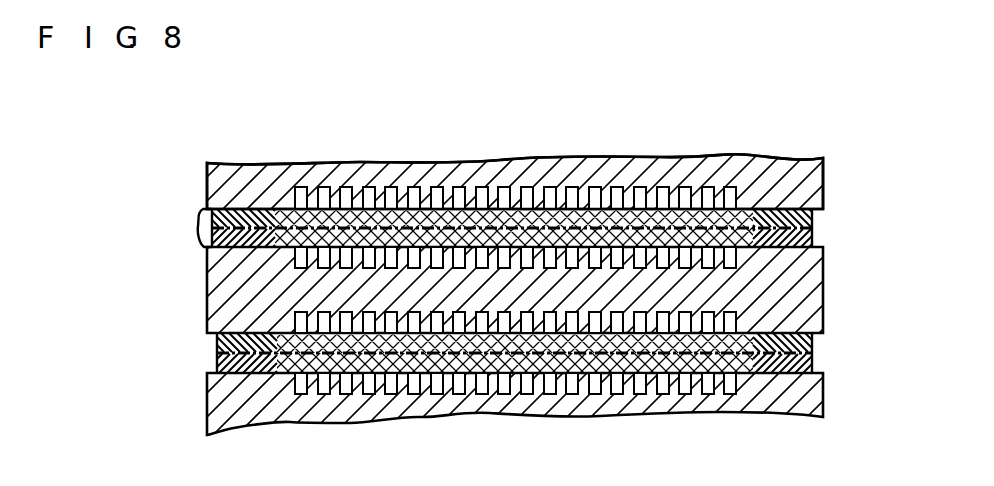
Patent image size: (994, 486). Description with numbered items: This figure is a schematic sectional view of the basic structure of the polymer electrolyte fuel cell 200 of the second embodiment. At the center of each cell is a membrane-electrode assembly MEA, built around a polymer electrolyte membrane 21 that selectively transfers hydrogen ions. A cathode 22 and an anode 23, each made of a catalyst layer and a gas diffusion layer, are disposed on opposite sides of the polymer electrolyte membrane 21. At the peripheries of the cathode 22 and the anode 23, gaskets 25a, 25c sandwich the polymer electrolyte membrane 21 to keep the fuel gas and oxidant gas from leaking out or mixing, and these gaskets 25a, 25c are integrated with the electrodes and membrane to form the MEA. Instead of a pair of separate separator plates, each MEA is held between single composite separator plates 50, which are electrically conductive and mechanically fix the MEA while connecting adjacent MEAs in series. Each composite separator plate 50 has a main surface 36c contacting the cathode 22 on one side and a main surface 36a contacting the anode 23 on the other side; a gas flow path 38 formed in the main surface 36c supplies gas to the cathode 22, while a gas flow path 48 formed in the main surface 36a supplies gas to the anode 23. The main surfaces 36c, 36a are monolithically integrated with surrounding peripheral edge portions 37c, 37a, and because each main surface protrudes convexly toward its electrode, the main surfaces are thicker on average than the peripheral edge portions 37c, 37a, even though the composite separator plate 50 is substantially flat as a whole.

The polymer electrolyte fuel cell 200 is at (816, 156).
The composite separator plate 50 is at (774, 182).
The gasket 25a is at (811, 200).
The polymer electrolyte membrane 21 is at (808, 225).
The gasket 25c is at (812, 241).
The cathode 22 is at (406, 210).
The anode 23 is at (333, 200).
The gas flow path 48 is at (553, 200).
The gas flow path 38 is at (580, 208).
The peripheral edge portion 37a is at (818, 336).
The peripheral edge portion 37c is at (815, 371).
The main surface 36a is at (427, 378).
The main surface 36c is at (470, 370).
The membrane-electrode assembly MEA is at (471, 228).